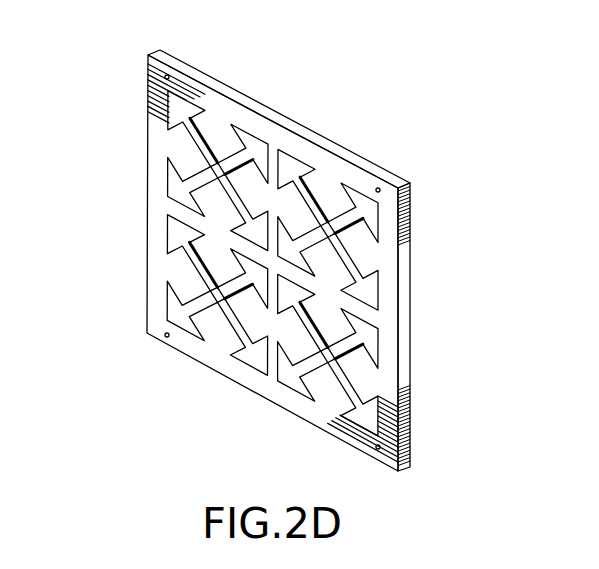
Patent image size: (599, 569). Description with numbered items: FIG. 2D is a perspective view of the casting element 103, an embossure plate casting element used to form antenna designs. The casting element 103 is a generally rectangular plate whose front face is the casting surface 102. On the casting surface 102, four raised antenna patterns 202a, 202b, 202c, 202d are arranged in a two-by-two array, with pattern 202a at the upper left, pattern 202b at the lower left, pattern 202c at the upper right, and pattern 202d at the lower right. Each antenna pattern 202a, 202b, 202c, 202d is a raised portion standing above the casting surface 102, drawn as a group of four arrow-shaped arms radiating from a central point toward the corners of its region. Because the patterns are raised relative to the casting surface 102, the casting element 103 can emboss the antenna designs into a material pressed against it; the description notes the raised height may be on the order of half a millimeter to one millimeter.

The casting surface 102 is at (149, 92).
The casting element 103 is at (450, 144).
The first arrow-shaped radiating element 202a is at (166, 173).
The second arrow-shaped radiating element 202b is at (166, 298).
The third arrow-shaped radiating element 202c is at (378, 230).
The fourth arrow-shaped radiating element 202d is at (370, 353).